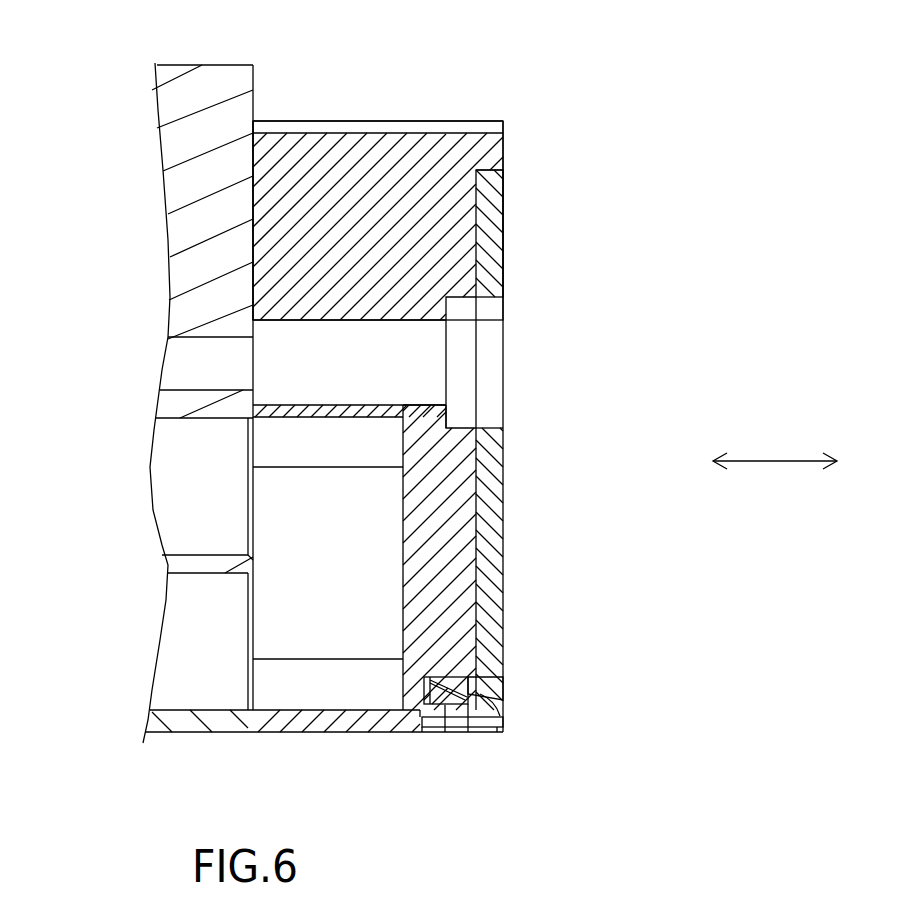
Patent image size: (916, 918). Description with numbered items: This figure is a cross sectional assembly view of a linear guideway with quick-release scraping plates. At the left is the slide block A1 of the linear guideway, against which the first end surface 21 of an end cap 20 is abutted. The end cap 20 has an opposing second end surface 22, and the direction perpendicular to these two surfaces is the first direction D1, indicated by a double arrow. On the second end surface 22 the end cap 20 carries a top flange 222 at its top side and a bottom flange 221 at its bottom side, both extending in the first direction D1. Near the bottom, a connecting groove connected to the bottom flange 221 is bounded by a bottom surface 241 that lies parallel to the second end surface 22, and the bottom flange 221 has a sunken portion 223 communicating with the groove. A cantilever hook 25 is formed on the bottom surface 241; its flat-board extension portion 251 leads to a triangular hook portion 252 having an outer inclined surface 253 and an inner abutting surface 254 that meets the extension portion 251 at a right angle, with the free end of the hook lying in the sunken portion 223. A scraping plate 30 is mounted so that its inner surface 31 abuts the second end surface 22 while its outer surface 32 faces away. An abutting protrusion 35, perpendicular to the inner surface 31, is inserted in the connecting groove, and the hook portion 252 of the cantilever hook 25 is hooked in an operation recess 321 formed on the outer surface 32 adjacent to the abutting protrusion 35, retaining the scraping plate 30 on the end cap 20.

The slide block A1 is at (160, 108).
The end cap 20 is at (372, 145).
The first end surface 21 is at (258, 156).
The second end surface 22 is at (504, 148).
The top flange 222 is at (490, 140).
The bottom flange 221 is at (504, 720).
The sunken portion 223 is at (437, 733).
The bottom surface 241 is at (424, 684).
The cantilever hook 25 is at (490, 793).
The extension portion 251 is at (448, 735).
The hook portion 252 is at (488, 735).
The outer inclined surface 253 is at (499, 735).
The inner abutting surface 254 is at (478, 735).
The scraping plate 30 is at (515, 442).
The inner surface 31 is at (504, 187).
The outer surface 32 is at (504, 250).
The operation recess 321 is at (504, 688).
The abutting protrusion 35 is at (455, 684).
The first direction D1 is at (796, 461).